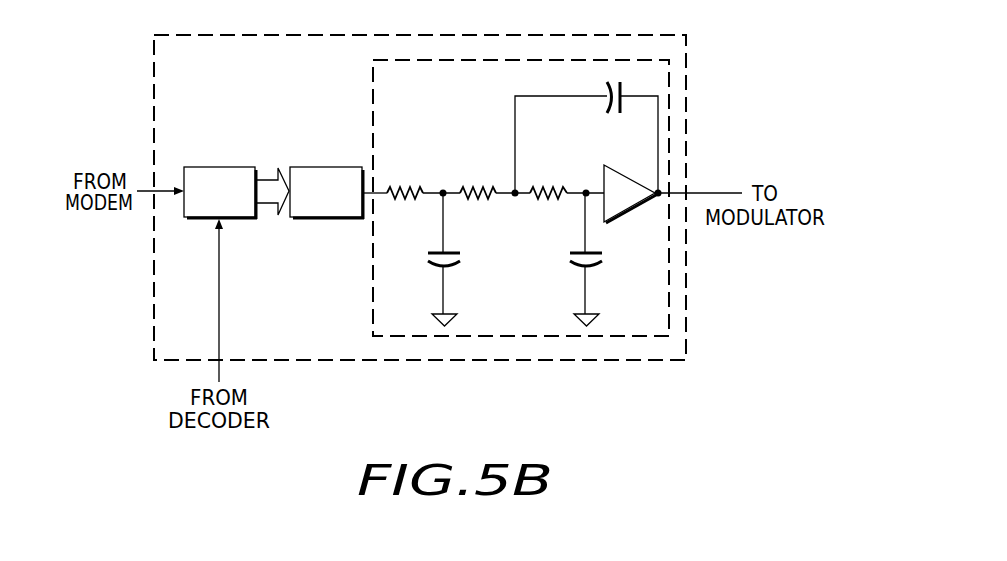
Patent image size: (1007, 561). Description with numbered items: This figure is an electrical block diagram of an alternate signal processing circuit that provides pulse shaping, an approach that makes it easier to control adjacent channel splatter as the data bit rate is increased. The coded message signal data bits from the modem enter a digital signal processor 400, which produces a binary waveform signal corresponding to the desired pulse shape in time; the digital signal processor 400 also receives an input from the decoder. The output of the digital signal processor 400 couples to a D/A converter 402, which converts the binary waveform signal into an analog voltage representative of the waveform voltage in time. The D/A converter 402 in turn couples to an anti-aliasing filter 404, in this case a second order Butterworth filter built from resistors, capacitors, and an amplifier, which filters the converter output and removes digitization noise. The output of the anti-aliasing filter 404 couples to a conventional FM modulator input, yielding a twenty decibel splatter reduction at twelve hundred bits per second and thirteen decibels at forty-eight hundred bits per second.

The digital signal processor (DSP) 400 is at (221, 166).
The D/A converter 402 is at (317, 166).
The anti-aliasing filter 404 is at (373, 97).